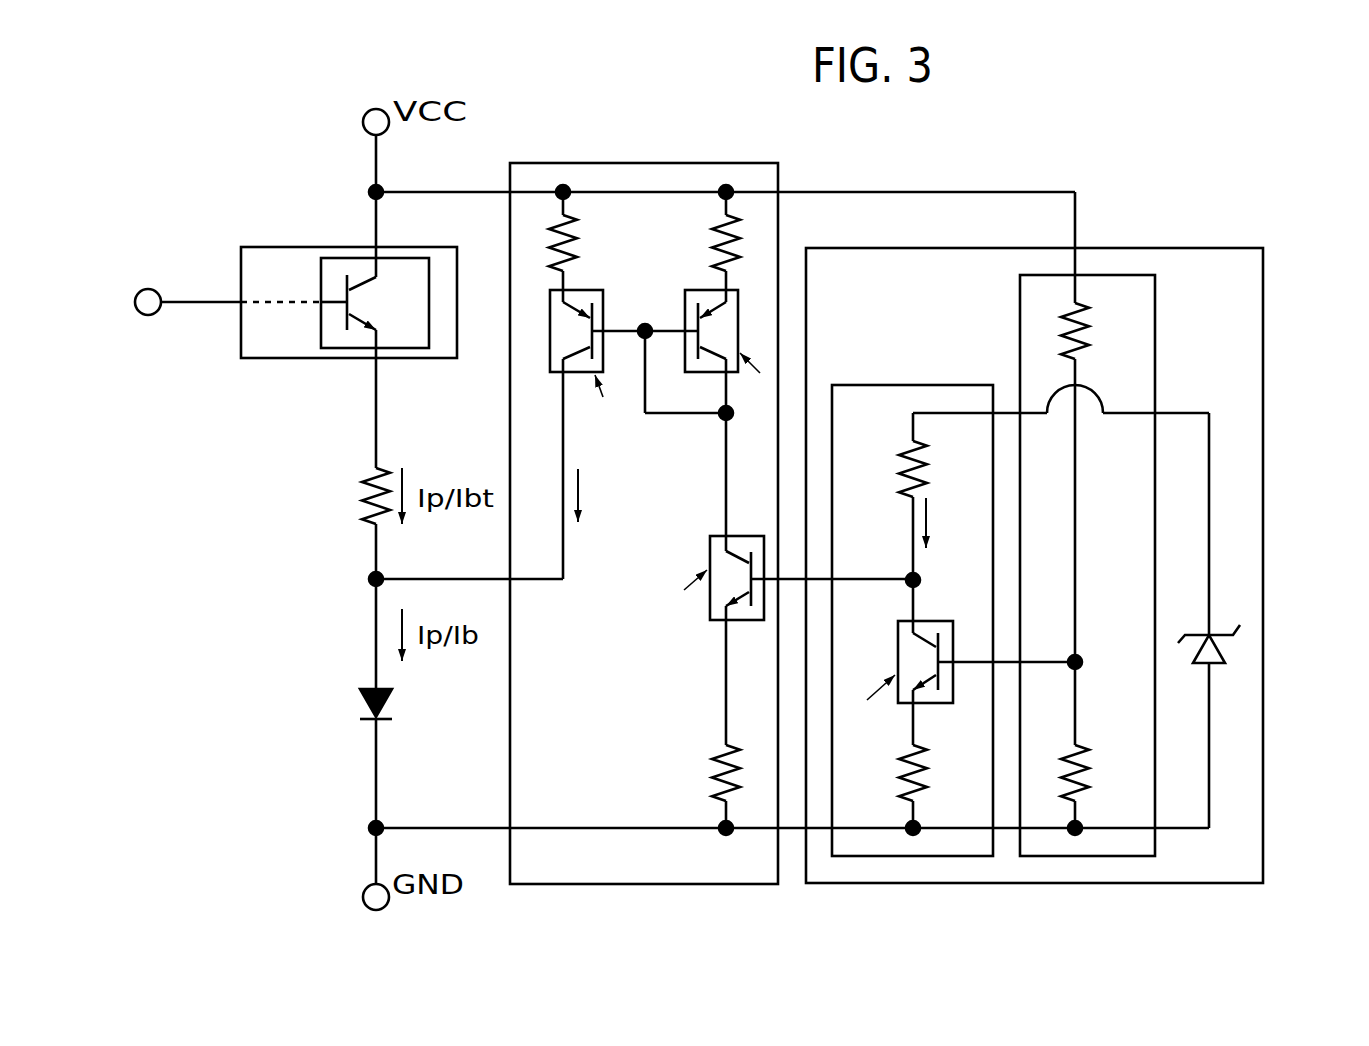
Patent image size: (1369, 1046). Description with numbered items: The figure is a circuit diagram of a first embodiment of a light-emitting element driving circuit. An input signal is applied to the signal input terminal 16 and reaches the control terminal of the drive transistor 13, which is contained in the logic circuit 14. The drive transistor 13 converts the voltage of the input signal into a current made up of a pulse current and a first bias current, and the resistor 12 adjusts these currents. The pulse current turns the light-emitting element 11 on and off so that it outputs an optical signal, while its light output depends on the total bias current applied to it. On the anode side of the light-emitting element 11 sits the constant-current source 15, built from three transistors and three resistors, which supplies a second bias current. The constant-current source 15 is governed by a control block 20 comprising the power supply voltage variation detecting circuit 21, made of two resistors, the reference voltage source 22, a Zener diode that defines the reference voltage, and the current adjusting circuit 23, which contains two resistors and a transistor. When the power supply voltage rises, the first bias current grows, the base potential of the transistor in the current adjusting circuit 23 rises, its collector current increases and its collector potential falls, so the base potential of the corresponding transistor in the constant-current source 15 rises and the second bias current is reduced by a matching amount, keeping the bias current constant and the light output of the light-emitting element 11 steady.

The light-emitting element 11 is at (355, 700).
The resistor 12 is at (346, 496).
The drive transistor 13 is at (320, 330).
The logic circuit 14 is at (318, 277).
The constant-current source 15 is at (623, 162).
The signal input terminal 16 is at (150, 282).
The bias control circuit 20 is at (1263, 330).
The power supply voltage variation detecting circuit 21 is at (1122, 273).
The reference voltage source 22 is at (1228, 647).
The current adjusting circuit 23 is at (950, 858).